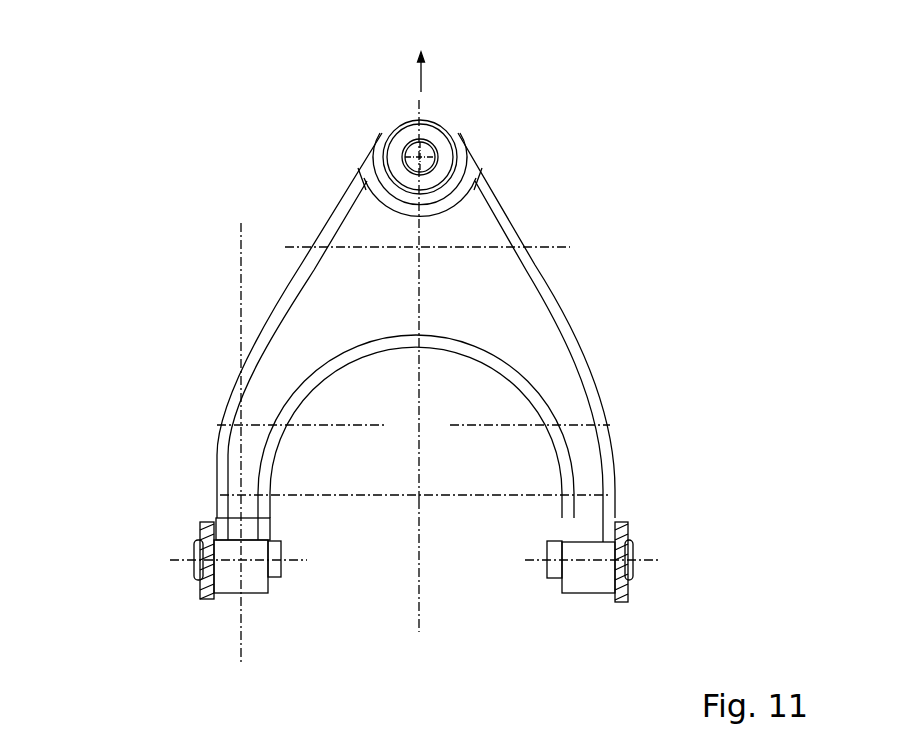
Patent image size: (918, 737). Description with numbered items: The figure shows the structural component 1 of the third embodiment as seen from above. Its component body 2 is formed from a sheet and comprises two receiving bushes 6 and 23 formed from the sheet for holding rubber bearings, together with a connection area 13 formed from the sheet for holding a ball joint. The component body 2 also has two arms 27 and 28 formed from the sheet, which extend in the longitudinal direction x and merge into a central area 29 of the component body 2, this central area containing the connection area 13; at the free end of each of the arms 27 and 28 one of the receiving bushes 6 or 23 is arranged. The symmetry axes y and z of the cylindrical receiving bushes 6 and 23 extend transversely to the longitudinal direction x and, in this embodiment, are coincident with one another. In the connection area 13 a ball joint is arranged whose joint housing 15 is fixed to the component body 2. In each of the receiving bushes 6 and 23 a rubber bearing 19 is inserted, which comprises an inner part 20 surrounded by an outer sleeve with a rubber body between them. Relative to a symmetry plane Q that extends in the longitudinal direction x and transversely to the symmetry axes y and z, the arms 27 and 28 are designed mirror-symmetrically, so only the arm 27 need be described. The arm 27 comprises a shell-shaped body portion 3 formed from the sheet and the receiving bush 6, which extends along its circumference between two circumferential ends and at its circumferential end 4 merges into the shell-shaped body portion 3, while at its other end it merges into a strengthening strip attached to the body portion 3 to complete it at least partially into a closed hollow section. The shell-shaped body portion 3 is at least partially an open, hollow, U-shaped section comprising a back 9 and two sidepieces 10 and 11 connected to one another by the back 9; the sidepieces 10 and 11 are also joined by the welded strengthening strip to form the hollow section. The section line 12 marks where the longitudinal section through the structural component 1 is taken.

The structural component 1 is at (252, 138).
The component body 2 is at (322, 226).
The shell-shaped body portion 3 is at (226, 453).
The circumferential end 4 is at (207, 522).
The receiving bush 6 is at (232, 582).
The back 9 is at (248, 468).
The sidepiece 10 is at (272, 508).
The sidepiece 11 is at (215, 503).
The section line 12 is at (241, 237).
The connection area 13 is at (480, 148).
The joint housing 15 is at (402, 128).
The rubber bearing 19 is at (184, 568).
The inner part 20 is at (280, 577).
The receiving bush 23 is at (587, 582).
The arm 27 is at (205, 477).
The arm 28 is at (618, 460).
The central area 29 is at (497, 292).
The longitudinal direction x is at (423, 86).
The symmetry axis y is at (181, 560).
The symmetry axis z is at (530, 558).
The symmetry plane Q is at (418, 580).